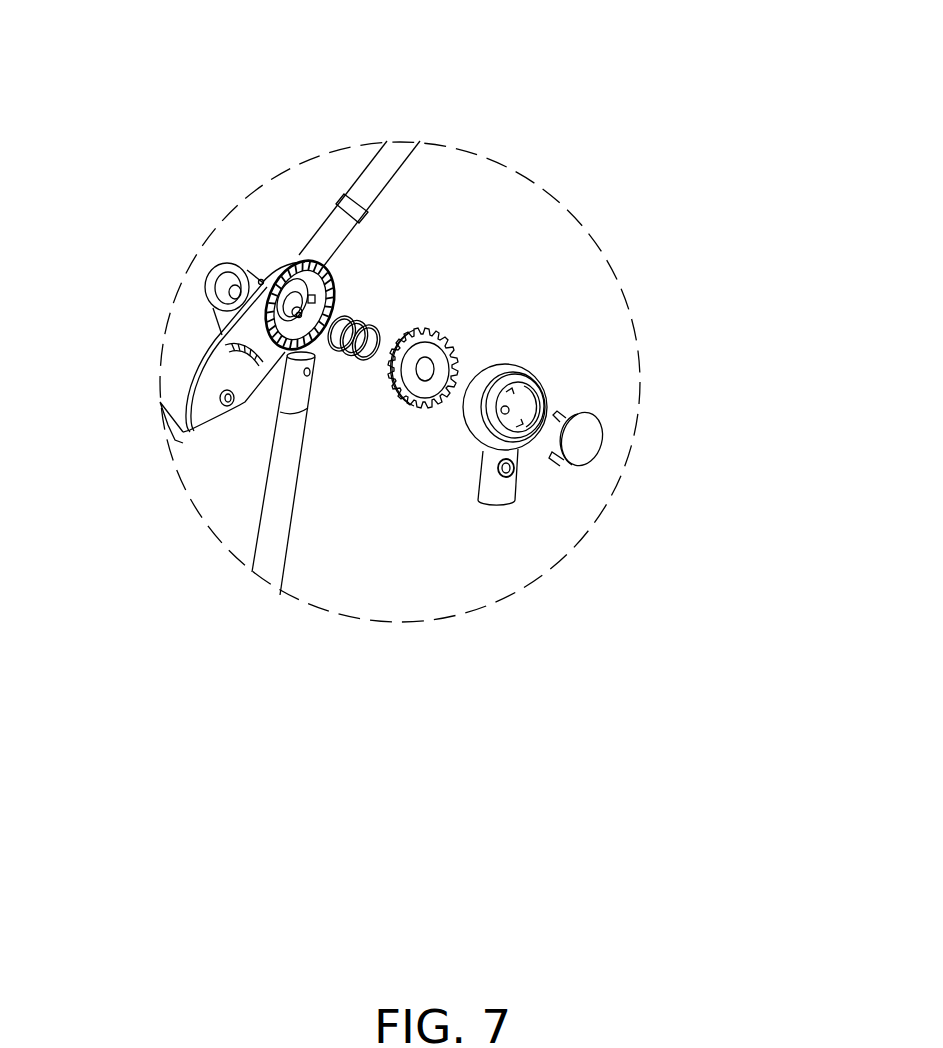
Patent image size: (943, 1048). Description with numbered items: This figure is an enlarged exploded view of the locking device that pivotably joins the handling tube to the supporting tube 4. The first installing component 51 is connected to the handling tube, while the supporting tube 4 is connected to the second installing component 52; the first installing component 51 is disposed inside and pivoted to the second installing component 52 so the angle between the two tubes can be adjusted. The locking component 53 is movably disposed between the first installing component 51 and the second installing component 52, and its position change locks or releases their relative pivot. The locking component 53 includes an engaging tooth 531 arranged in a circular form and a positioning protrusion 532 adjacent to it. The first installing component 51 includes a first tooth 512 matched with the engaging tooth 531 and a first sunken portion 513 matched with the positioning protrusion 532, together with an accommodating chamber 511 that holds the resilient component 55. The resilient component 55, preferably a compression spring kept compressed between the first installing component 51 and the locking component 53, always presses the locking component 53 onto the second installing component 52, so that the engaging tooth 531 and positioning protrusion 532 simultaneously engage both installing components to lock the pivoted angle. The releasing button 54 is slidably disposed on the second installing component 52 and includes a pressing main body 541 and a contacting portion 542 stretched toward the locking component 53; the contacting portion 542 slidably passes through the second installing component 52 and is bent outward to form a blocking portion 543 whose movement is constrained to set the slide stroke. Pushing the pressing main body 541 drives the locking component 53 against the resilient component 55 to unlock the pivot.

The supporting tube 4 is at (238, 530).
The first installing component 51 is at (278, 58).
The accommodating chamber 511 is at (262, 283).
The first tooth 512 is at (305, 262).
The first sunken portion 513 is at (342, 289).
The resilient component 55 is at (367, 323).
The locking component 53 is at (778, 222).
The engaging tooth 531 is at (441, 336).
The positioning protrusion 532 is at (457, 364).
The second installing component 52 is at (537, 377).
The releasing button 54 is at (757, 487).
The pressing main body 541 is at (583, 438).
The contacting portion 542 is at (562, 458).
The blocking portion 543 is at (565, 412).